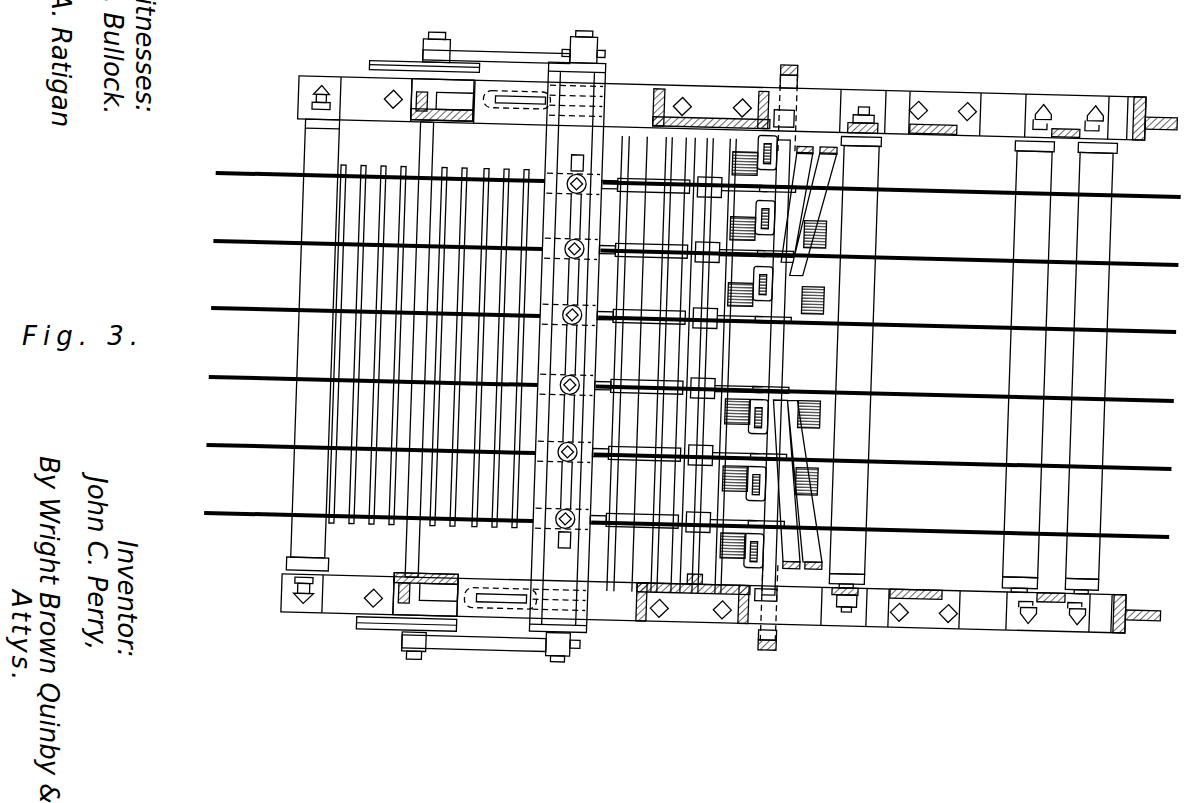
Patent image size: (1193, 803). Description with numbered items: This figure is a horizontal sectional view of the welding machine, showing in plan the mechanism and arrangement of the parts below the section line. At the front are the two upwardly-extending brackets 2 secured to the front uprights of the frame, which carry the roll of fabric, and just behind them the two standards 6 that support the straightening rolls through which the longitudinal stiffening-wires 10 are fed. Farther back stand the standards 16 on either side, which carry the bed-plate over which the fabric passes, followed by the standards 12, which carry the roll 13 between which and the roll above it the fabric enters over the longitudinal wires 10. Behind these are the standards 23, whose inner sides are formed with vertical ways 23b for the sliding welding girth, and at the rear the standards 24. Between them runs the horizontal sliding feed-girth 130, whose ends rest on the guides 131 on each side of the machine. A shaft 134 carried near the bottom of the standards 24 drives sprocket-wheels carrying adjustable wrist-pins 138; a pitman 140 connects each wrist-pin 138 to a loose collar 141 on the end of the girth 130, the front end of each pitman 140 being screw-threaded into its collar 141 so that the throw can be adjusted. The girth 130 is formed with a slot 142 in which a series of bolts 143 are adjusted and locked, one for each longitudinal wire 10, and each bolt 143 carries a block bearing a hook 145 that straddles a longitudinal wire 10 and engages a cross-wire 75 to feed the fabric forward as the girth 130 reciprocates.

The upwardly-extending bracket 2 is at (1164, 100).
The standard 6 is at (1064, 106).
The longitudinal stiffening-wire 10 is at (1160, 472).
The standard 12 is at (856, 106).
The roll 13 is at (866, 557).
The standard 16 is at (942, 95).
The standard 23 is at (706, 92).
The vertical way 23b is at (738, 658).
The standard 24 is at (450, 120).
The cross-wire 75 is at (350, 210).
The horizontal sliding girth 130 is at (582, 585).
The guide 131 is at (512, 118).
The shaft 134 is at (412, 552).
The wrist-pin 138 is at (418, 40).
The pitman 140 is at (478, 45).
The loose collar 141 is at (588, 50).
The slot 142 is at (568, 543).
The bolt 143 is at (780, 346).
The hook 145 is at (642, 195).